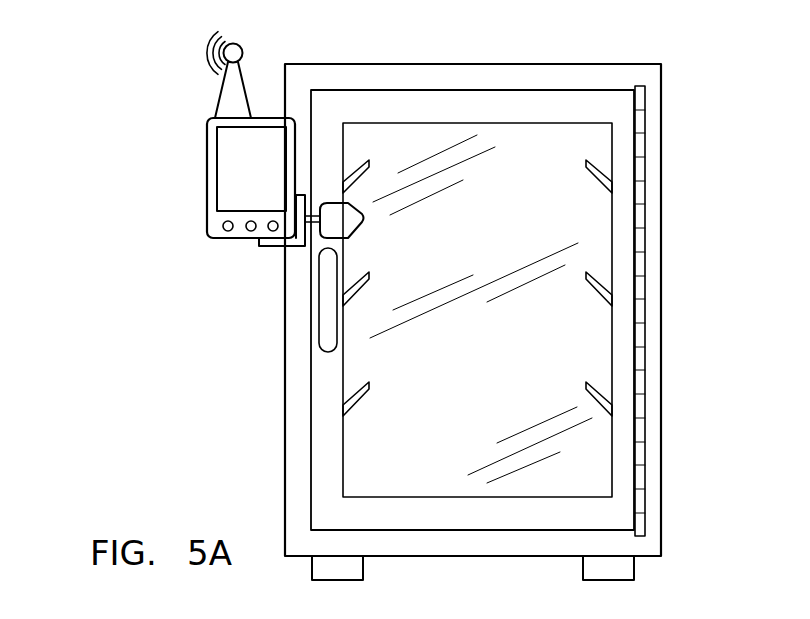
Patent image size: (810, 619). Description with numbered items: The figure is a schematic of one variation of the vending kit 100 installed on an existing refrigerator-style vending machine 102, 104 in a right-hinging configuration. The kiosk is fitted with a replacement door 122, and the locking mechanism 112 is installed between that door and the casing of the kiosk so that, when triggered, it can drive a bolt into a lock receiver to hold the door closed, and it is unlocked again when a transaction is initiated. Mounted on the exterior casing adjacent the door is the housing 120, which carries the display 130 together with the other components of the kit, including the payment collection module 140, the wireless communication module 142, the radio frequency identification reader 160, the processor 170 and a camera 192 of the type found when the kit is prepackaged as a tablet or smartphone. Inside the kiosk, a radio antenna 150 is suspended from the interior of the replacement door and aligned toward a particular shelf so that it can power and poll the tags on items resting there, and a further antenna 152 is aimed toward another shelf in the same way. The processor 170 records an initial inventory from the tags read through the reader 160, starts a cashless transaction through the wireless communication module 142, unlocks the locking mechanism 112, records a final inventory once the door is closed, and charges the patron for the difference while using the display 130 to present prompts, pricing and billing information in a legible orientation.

The vending kit 100 is at (106, 350).
The vending machine 102 is at (524, 309).
The housing 104 is at (662, 95).
The locking mechanism 112 is at (298, 195).
The housing 120 is at (201, 243).
The replacement door 122 is at (623, 365).
The display 130 is at (223, 202).
The payment collection module 140 is at (161, 64).
The wireless communication module 142 is at (200, 57).
The radio antenna 150 is at (600, 178).
The middle shelf 152 is at (600, 281).
The radio frequency identification reader 160 is at (272, 238).
The processor 170 is at (228, 232).
The camera 192 is at (250, 238).